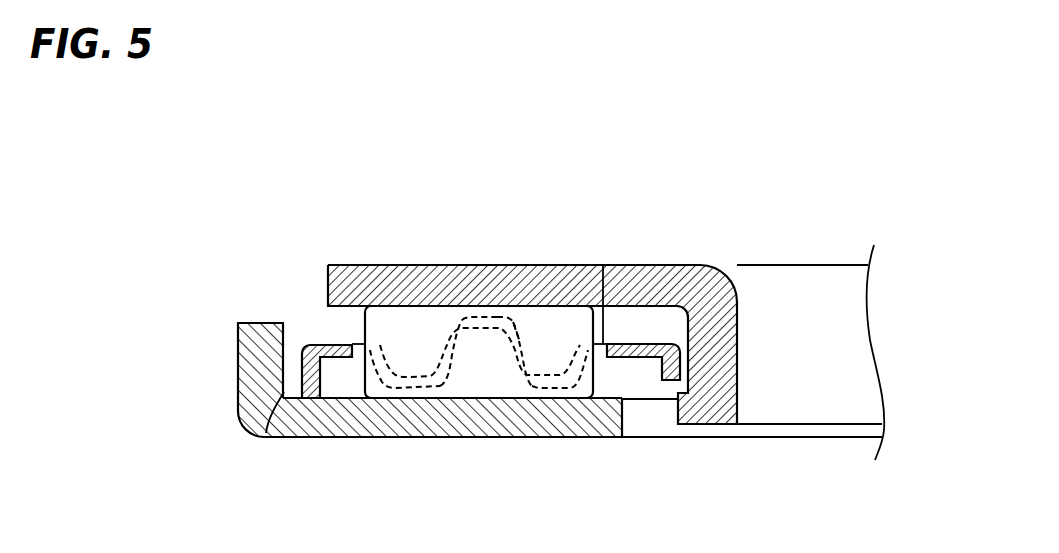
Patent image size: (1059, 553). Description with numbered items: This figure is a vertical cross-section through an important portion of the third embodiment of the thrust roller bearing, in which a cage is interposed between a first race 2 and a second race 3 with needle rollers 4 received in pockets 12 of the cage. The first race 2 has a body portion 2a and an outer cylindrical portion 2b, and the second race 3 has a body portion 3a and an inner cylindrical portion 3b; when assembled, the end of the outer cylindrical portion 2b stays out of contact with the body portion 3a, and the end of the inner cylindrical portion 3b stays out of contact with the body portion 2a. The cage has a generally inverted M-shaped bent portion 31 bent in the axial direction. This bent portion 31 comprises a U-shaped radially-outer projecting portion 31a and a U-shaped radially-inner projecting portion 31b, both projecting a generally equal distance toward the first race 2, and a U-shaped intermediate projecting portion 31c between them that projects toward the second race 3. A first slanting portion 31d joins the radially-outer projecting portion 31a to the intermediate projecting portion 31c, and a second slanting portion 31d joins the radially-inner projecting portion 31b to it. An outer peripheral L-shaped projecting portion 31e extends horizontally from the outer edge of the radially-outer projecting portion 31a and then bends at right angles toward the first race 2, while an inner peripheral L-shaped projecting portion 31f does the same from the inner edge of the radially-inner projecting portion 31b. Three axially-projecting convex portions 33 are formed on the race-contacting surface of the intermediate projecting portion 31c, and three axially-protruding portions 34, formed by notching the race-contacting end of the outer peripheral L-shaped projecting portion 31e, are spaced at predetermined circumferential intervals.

The first race 2 is at (420, 437).
The body portion of the first race 2a is at (518, 437).
The outer cylindrical portion of the first race 2b is at (238, 378).
The second race 3 is at (477, 265).
The body portion of the second race 3a is at (572, 265).
The inner cylindrical portion of the second race 3b is at (737, 388).
The needle roller 4 is at (388, 322).
The pocket 12 is at (607, 265).
The generally inverted M-shaped bent portion 31 is at (430, 310).
The radially-outer projecting portion 31a is at (396, 388).
The radially-inner projecting portion 31b is at (552, 388).
The intermediate projecting portion 31c is at (505, 318).
The slanting portion 31d is at (507, 353).
The outer peripheral L-shaped projecting portion 31e is at (315, 345).
The inner peripheral L-shaped projecting portion 31f is at (673, 307).
The convex portion 33 is at (472, 314).
The protruding portion 34 is at (267, 432).